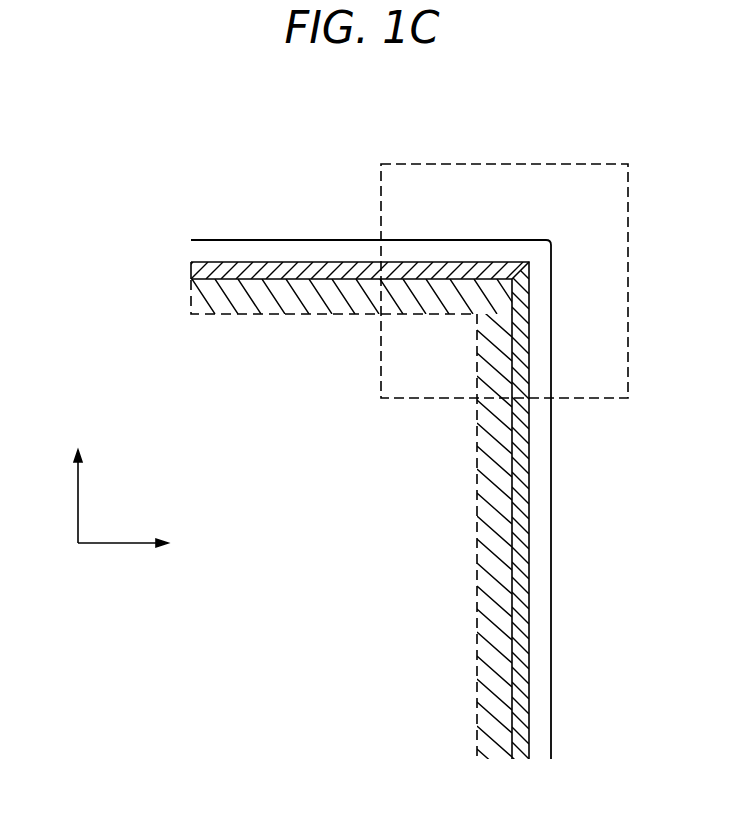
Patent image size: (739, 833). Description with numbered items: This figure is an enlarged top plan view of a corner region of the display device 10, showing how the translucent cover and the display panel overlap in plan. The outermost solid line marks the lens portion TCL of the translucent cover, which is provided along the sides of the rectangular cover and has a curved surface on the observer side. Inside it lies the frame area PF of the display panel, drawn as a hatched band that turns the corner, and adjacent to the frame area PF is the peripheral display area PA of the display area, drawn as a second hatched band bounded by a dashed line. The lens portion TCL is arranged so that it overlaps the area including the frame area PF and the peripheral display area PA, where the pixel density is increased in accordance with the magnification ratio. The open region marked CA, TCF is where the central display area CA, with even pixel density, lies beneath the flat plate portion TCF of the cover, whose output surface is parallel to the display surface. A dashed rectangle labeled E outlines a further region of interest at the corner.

The display device 10 is at (363, 119).
The enlarged region E is at (628, 262).
The lens portion TCL is at (545, 731).
The frame area PF is at (520, 761).
The peripheral display area PA is at (489, 728).
The central display area CA is at (315, 540).
The flat plate portion TCF is at (354, 540).